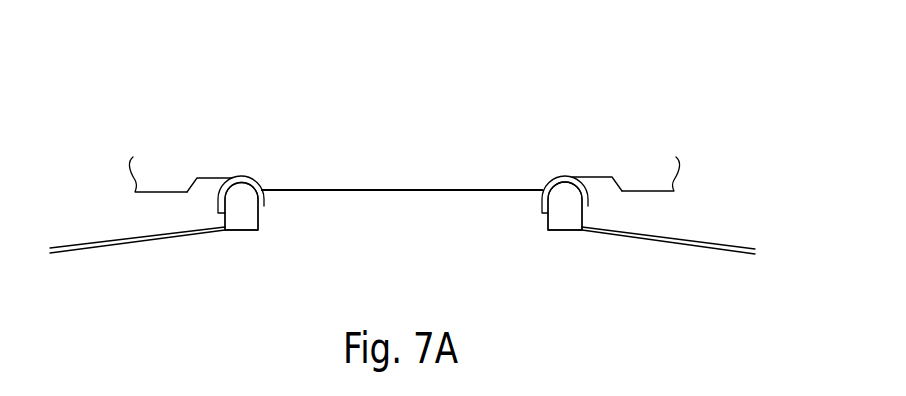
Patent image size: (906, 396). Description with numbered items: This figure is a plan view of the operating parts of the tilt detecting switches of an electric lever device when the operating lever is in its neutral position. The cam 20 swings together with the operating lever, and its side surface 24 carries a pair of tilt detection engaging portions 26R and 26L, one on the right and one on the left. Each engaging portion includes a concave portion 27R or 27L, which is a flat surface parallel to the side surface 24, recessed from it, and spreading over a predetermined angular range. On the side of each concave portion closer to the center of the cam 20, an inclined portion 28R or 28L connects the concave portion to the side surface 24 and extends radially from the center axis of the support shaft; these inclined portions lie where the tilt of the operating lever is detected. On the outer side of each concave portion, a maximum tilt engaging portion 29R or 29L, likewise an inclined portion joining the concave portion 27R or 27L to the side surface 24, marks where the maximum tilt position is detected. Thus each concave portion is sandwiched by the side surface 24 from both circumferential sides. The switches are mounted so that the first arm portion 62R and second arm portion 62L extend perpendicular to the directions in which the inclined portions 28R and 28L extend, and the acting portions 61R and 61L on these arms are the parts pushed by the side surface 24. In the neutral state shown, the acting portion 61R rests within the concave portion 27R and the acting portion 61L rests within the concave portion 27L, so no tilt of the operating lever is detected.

The cam 20 is at (427, 136).
The side surface 24 is at (402, 192).
The tilt detection engaging portion 26L is at (230, 173).
The tilt detection engaging portion 26R is at (577, 170).
The concave portion 27L is at (213, 175).
The concave portion 27R is at (593, 175).
The inclined portion 28L is at (263, 178).
The inclined portion 28R is at (548, 182).
The maximum tilt engaging portion 29L is at (188, 178).
The maximum tilt engaging portion 29R is at (618, 182).
The acting portion 61L is at (243, 200).
The acting portion 61R is at (562, 200).
The second arm portion 62L is at (125, 248).
The first arm portion 62R is at (680, 248).